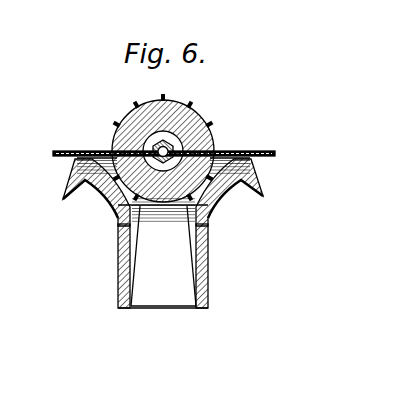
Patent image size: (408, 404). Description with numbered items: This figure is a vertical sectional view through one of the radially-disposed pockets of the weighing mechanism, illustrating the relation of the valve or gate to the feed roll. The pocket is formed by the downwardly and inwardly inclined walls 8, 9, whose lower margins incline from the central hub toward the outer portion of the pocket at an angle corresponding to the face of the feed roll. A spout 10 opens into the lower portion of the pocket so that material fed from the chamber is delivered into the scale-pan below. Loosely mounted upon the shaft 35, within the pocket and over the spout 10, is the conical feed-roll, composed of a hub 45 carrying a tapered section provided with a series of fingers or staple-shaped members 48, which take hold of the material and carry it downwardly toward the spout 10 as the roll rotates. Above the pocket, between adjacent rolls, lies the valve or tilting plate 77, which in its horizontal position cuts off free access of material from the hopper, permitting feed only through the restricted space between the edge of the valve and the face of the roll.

The valve or tilting plate 77 is at (53, 150).
The shaft 35 is at (147, 146).
The hub 45 is at (168, 130).
The fingers or staple-shaped members 48 is at (195, 104).
The inclined wall 8 is at (93, 203).
The inclined wall 9 is at (230, 205).
The spout 10 is at (177, 250).